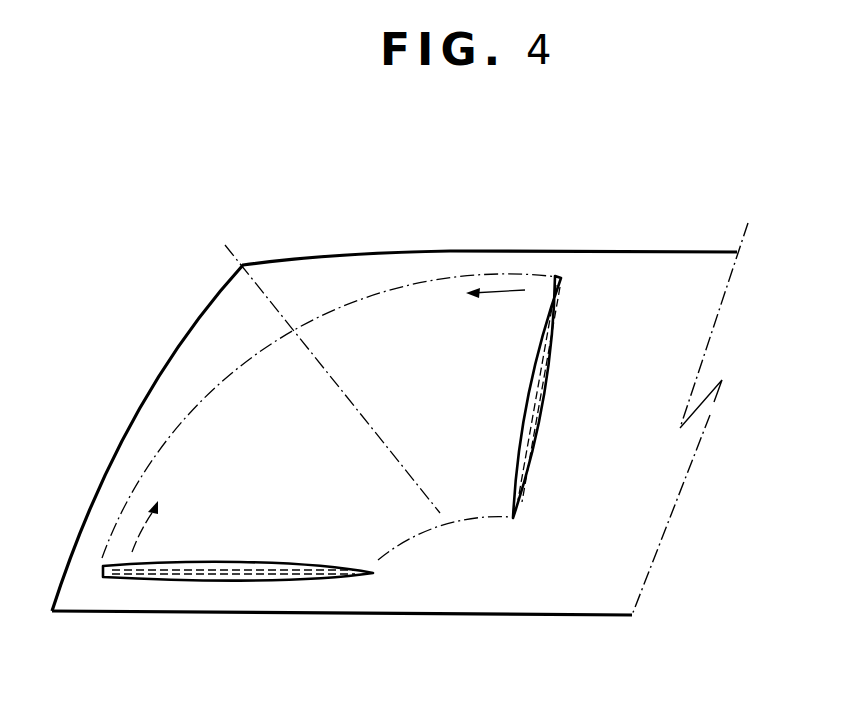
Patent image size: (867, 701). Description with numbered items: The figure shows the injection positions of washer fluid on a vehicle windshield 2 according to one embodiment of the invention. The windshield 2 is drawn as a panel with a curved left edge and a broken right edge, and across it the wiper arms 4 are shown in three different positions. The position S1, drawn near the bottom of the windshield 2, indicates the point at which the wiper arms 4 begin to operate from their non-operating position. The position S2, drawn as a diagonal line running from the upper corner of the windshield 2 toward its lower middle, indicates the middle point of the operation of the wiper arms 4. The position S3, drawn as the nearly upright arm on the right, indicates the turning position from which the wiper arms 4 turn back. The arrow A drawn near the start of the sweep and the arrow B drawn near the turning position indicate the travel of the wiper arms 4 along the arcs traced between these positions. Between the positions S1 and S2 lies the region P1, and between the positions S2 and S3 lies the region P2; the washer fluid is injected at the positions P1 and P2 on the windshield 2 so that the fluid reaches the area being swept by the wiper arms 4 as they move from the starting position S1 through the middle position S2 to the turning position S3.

The windshield 2 is at (174, 336).
The wiper arms 4 is at (278, 580).
The starting position of wiper arms S1 is at (97, 573).
The middle position of wiper arms S2 is at (319, 361).
The turning position of wiper arms S3 is at (558, 277).
The direction of wiper movement A is at (153, 514).
The direction of wiper movement B is at (485, 302).
The first washer fluid injection position P1 is at (330, 416).
The second washer fluid injection position P2 is at (444, 484).